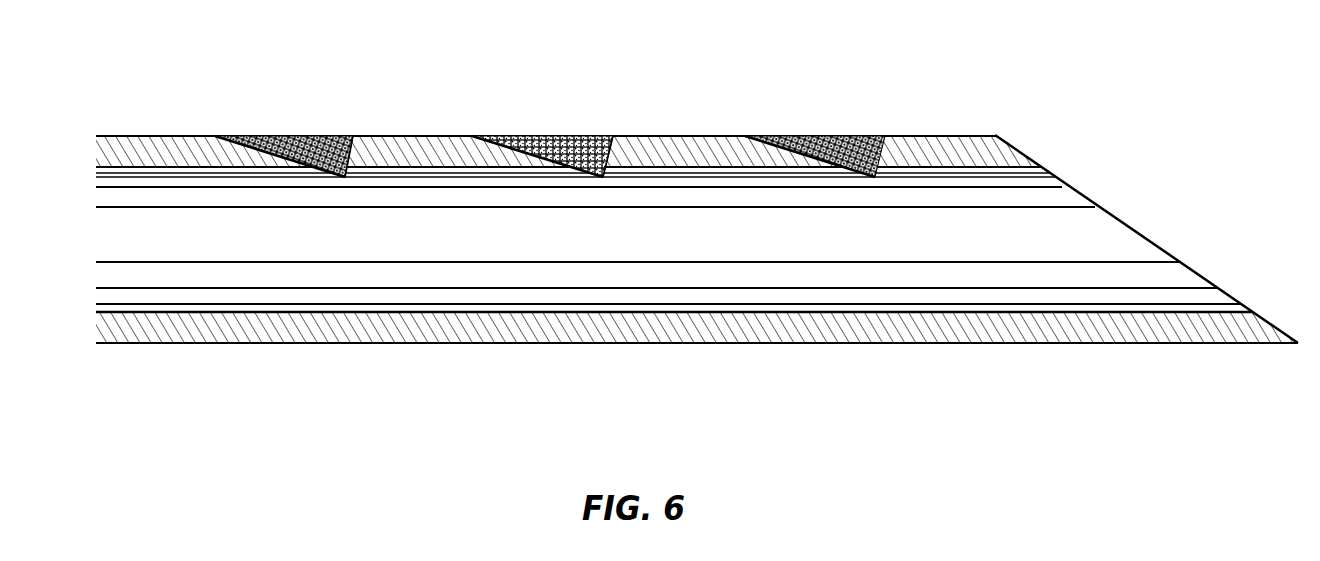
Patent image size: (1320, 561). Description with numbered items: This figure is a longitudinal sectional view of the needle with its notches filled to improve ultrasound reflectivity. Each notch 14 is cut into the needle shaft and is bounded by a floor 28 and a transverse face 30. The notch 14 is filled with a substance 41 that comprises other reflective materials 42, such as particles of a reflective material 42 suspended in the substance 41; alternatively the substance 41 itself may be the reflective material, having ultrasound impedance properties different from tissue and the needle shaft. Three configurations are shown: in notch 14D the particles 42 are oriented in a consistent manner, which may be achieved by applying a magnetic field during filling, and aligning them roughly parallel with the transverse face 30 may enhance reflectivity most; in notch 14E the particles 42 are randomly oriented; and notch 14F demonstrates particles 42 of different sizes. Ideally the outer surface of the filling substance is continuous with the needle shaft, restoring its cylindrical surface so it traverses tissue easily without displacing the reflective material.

The notch 14 is at (317, 168).
The notch 14D is at (297, 117).
The notch 14E is at (543, 115).
The notch 14F is at (833, 115).
The floor 28 is at (278, 138).
The transverse face 30 is at (350, 138).
The substance 41 is at (778, 142).
The reflective material 42 is at (310, 137).